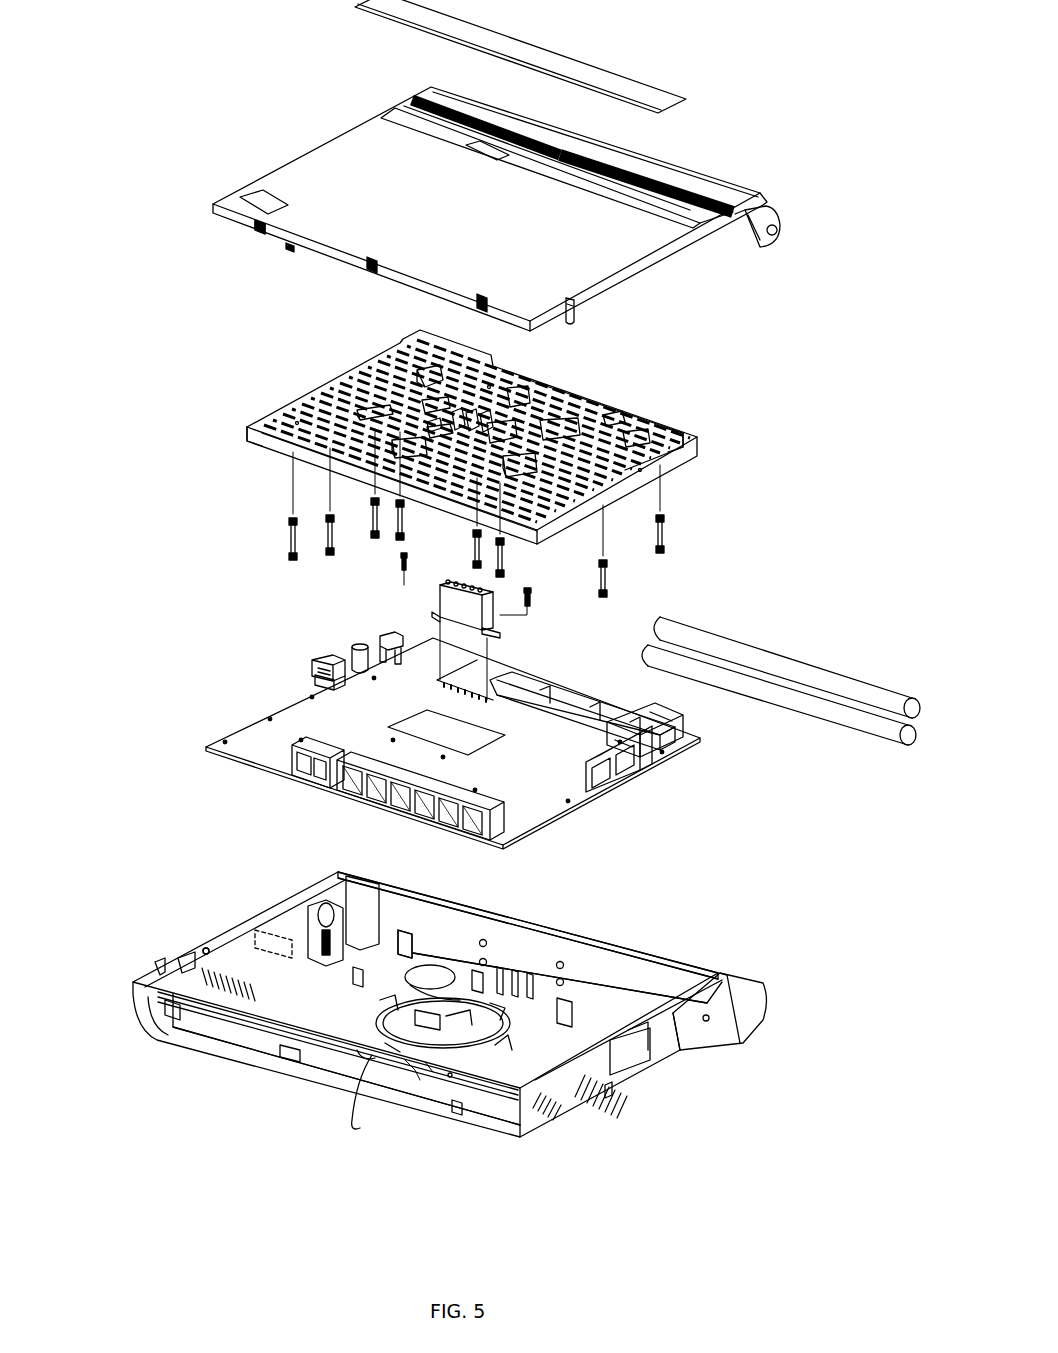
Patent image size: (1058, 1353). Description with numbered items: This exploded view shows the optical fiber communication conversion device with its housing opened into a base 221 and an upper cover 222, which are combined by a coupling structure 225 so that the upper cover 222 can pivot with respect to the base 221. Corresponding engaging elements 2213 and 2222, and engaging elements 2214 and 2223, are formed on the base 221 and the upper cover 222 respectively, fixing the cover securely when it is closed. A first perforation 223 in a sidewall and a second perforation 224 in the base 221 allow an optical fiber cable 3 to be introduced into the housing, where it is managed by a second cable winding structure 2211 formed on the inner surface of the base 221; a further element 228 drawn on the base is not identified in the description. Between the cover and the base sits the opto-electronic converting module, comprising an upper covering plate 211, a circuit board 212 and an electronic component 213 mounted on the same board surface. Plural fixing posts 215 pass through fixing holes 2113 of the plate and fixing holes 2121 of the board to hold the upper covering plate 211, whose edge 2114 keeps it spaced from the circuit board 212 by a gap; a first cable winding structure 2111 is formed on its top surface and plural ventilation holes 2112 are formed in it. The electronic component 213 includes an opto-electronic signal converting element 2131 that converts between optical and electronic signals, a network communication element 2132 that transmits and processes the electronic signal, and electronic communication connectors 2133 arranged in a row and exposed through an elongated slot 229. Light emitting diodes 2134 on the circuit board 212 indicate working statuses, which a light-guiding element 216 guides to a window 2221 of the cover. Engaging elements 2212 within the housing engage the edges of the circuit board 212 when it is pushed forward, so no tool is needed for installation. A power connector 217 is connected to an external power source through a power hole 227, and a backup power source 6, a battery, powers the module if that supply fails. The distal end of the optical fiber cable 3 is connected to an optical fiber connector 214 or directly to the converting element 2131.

The optical fiber cable 3 is at (352, 1120).
The backup power source 6 is at (770, 657).
The upper covering plate 211 is at (293, 393).
The first cable winding structure 2111 is at (430, 427).
The ventilation holes 2112 is at (613, 418).
The fixing holes 2113 is at (680, 432).
The edge 2114 is at (248, 437).
The circuit board 212 is at (259, 742).
The fixing holes 2121 is at (620, 742).
The electronic component 213 is at (305, 672).
The opto-electronic signal converting element 2131 is at (697, 742).
The network communication element 2132 is at (482, 742).
The electronic communication connector 2133 is at (339, 782).
The light emitting diodes 2134 is at (460, 688).
The optical fiber connector 214 is at (512, 678).
The fixing posts 215 is at (663, 537).
The light-guiding element 216 is at (448, 610).
The power connector 217 is at (385, 640).
The base 221 is at (146, 1006).
The second cable winding structure 2211 is at (335, 1044).
The engaging elements 2212 is at (472, 980).
The engaging element 2213 is at (160, 969).
The engaging element 2214 is at (182, 964).
The upper cover 222 is at (697, 177).
The window 2221 is at (466, 158).
The engaging element 2222 is at (261, 232).
The engaging element 2223 is at (577, 312).
The first perforation 223 is at (206, 951).
The second perforation 224 is at (332, 1071).
The coupling structure 225 is at (764, 215).
The power hole 227 is at (328, 915).
The rear wall 228 is at (643, 952).
The elongated slot 229 is at (230, 1024).